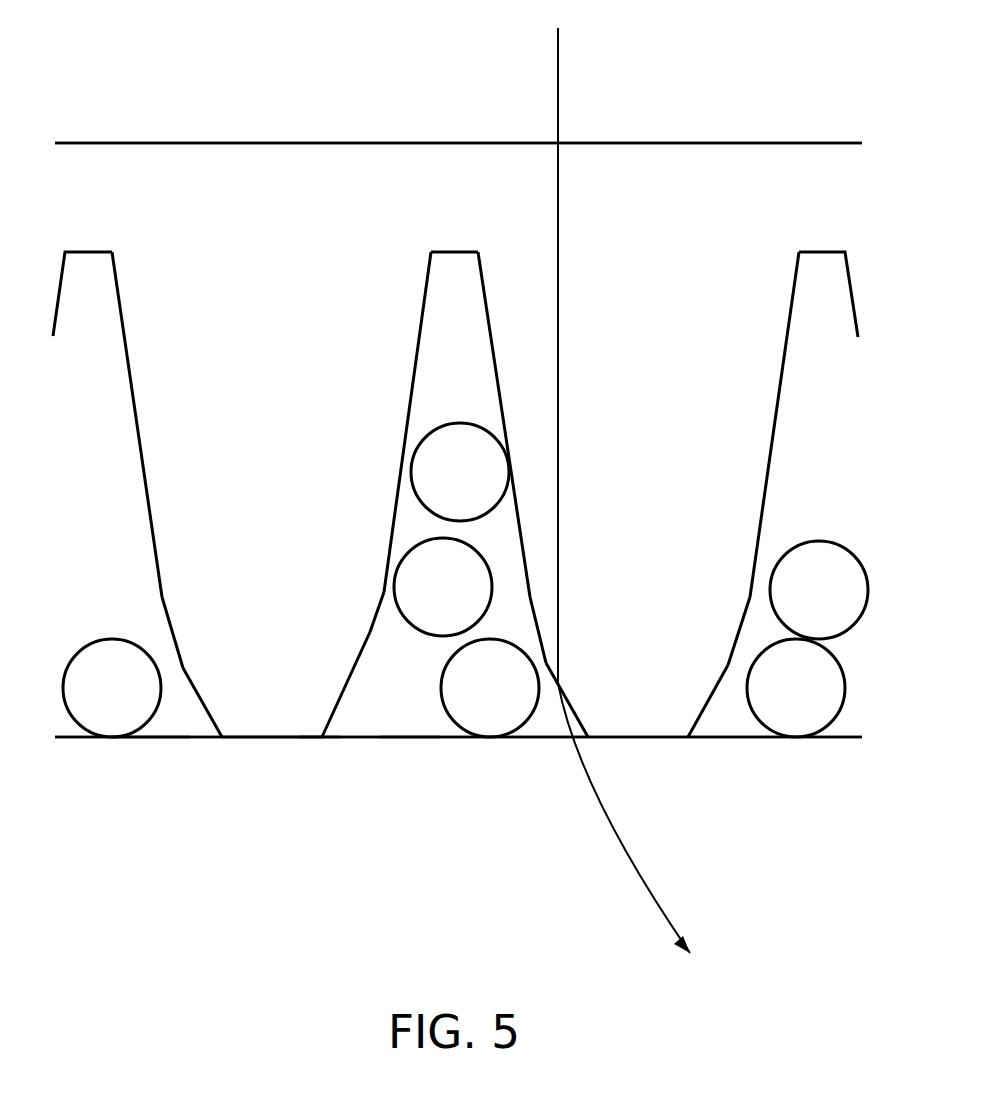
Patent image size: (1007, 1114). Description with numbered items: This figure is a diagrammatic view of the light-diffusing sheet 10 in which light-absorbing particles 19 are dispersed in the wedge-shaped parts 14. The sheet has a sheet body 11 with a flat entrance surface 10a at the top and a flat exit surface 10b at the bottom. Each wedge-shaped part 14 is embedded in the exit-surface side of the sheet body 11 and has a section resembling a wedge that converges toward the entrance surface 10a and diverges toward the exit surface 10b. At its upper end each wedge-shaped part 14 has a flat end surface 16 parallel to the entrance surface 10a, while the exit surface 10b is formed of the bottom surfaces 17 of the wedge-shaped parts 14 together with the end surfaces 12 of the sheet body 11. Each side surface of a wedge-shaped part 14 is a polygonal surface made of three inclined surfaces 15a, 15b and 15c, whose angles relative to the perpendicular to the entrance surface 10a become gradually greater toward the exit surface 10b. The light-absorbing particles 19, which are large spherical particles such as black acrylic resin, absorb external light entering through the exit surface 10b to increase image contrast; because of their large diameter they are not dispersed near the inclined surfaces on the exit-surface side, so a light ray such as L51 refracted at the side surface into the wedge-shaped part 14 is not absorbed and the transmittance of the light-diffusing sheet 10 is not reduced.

The light-diffusing sheet 10 is at (378, 85).
The entrance surface 10a is at (170, 143).
The exit surface 10b is at (432, 837).
The sheet body 11 is at (248, 737).
The end surfaces 12 is at (302, 738).
The wedge-shaped parts 14 is at (152, 737).
The inclined surface 15a is at (130, 345).
The inclined surface 15b is at (177, 633).
The inclined surface 15c is at (203, 698).
The flat end surface 16 is at (88, 250).
The bottom surfaces 17 is at (407, 738).
The light-absorbing particles 19 is at (428, 466).
The line L51 is at (633, 491).